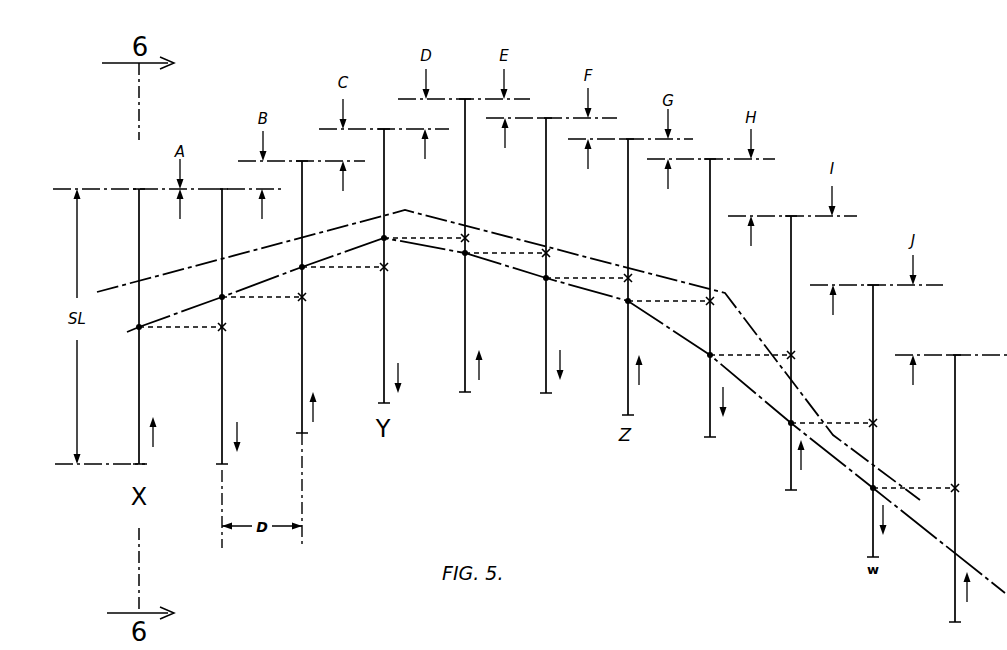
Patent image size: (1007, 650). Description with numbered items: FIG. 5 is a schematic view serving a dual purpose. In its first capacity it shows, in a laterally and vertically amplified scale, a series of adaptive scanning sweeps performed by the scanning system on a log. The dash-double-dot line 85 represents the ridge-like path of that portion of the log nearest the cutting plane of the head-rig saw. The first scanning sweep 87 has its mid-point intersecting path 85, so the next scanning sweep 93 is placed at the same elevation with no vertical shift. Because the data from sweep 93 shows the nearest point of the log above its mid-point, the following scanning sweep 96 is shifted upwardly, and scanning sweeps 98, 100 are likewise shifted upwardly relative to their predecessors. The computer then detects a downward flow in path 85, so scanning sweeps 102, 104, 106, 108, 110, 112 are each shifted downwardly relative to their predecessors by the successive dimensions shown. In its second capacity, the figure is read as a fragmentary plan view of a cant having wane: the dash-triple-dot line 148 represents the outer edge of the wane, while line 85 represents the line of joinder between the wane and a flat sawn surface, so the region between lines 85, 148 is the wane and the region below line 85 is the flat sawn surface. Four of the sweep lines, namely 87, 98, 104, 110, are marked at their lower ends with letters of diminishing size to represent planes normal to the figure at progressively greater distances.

The dash-double-dot line 85 is at (222, 297).
The first scanning sweep 87 is at (139, 388).
The scanning sweep 93 is at (222, 378).
The scanning sweep 96 is at (302, 358).
The scanning sweep 98 is at (384, 343).
The scanning sweep 100 is at (465, 339).
The scanning sweep 102 is at (546, 339).
The scanning sweep 104 is at (628, 397).
The scanning sweep 106 is at (710, 432).
The scanning sweep 108 is at (791, 478).
The scanning sweep 110 is at (873, 545).
The scanning sweep 112 is at (955, 610).
The dash-triple-dot line 148 is at (857, 452).